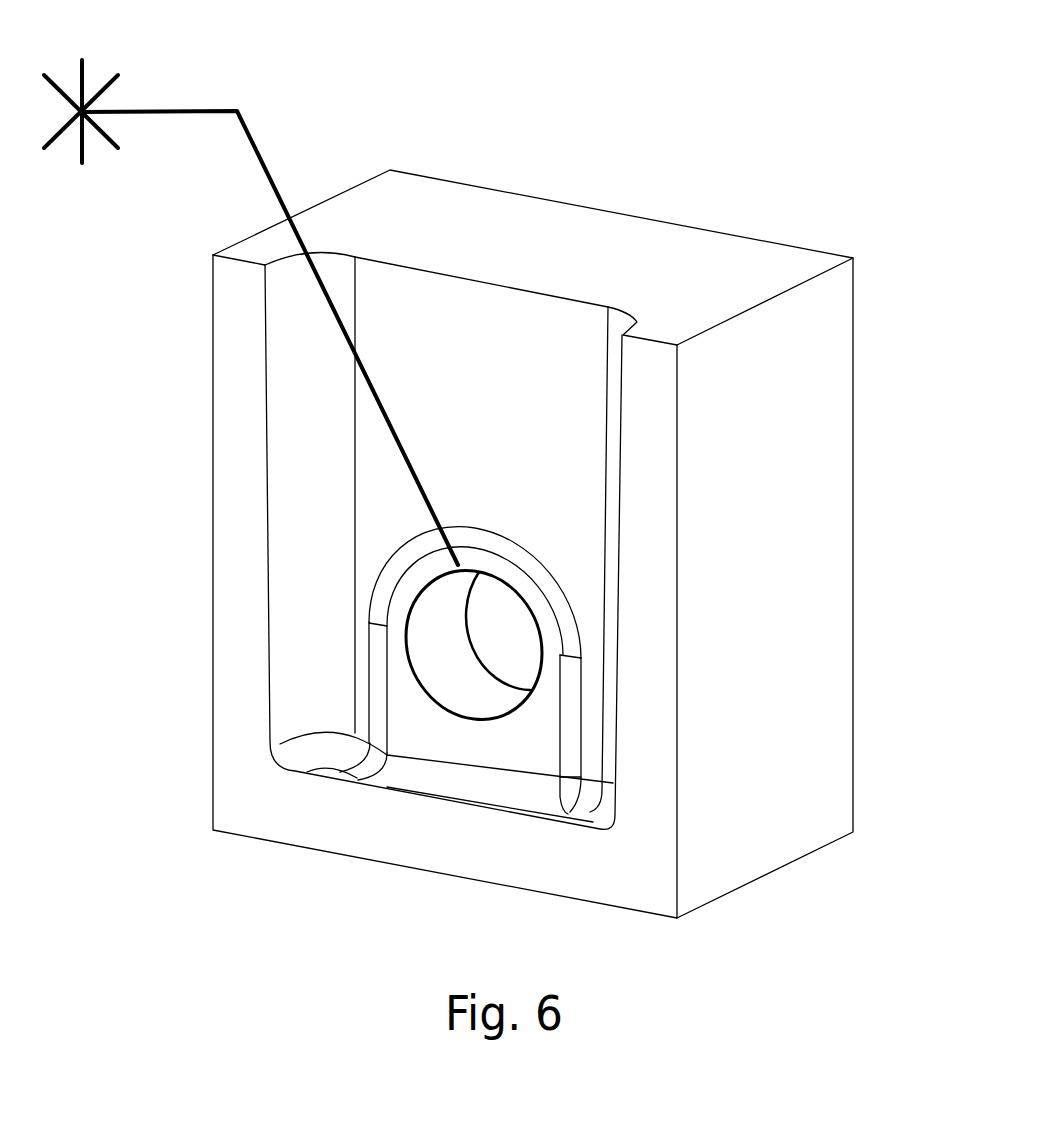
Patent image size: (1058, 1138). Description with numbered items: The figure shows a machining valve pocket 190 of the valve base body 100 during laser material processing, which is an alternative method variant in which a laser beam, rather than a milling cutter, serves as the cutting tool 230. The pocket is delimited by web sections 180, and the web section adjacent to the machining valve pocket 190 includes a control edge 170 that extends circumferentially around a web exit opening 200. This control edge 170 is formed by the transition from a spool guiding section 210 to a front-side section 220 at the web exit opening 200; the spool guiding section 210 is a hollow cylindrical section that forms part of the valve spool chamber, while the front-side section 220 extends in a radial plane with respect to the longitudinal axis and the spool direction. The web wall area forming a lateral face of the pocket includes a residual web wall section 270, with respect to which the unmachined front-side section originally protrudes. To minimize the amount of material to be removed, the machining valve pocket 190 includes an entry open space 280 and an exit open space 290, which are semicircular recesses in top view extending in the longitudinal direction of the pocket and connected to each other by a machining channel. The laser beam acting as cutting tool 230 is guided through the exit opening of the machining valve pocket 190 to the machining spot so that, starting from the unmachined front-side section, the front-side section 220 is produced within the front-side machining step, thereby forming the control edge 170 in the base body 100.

The fully machined base body 100 is at (851, 128).
The control edge 170 is at (406, 641).
The web section 180 is at (488, 220).
The machining valve pocket 190 is at (407, 288).
The web exit opening 200 is at (427, 693).
The spool guiding section 210 is at (438, 605).
The front-side section 220 is at (473, 743).
The cutting tool 230 is at (163, 108).
The residual web wall section 270 is at (528, 512).
The entry open space 280 is at (293, 325).
The exit open space 290 is at (618, 388).